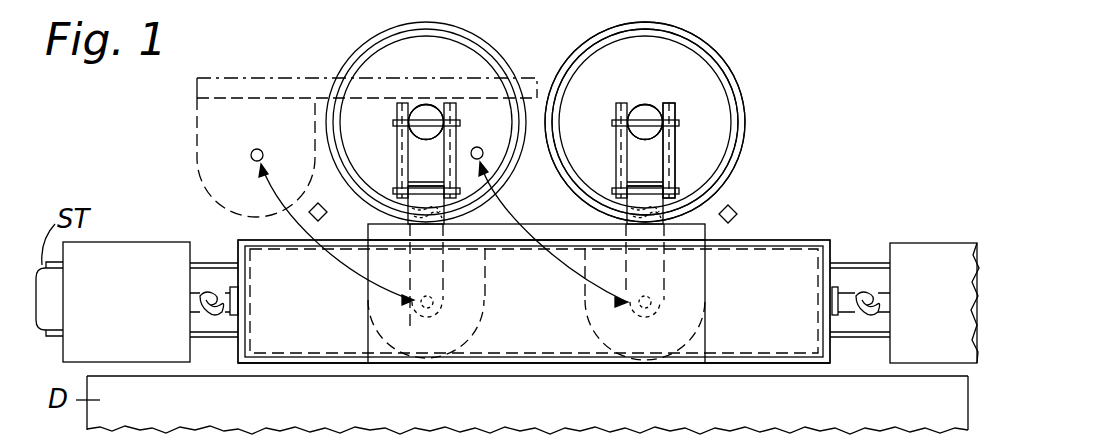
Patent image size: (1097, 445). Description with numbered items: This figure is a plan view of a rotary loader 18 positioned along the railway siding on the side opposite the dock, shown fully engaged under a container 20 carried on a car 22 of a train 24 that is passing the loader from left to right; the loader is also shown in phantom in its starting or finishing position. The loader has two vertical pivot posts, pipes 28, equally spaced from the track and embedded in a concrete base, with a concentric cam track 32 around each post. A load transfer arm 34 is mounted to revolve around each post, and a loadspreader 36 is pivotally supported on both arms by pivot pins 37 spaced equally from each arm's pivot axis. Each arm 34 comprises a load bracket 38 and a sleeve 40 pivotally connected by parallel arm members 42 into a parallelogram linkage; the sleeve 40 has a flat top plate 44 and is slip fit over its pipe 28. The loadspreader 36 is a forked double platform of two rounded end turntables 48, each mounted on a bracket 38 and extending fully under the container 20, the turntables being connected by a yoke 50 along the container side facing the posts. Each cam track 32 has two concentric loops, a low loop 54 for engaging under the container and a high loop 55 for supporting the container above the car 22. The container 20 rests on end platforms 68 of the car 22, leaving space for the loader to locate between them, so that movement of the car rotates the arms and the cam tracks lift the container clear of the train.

The rotary loader 18 is at (680, 114).
The container 20 is at (262, 258).
The car 22 is at (127, 242).
The train 24 is at (958, 222).
The pipe 28 is at (440, 100).
The cam track 32 is at (378, 45).
The load transfer arm 34 is at (420, 168).
The loadspreader 36 is at (368, 226).
The pivot pin 37 is at (596, 324).
The load bracket 38 is at (625, 312).
The sleeve 40 is at (632, 108).
The parallel arm member 42 is at (420, 158).
The flat top plate 44 is at (425, 108).
The turntable 48 is at (643, 364).
The yoke 50 is at (561, 206).
The low loop 54 is at (742, 155).
The high loop 55 is at (735, 132).
The end platform 68 is at (308, 332).